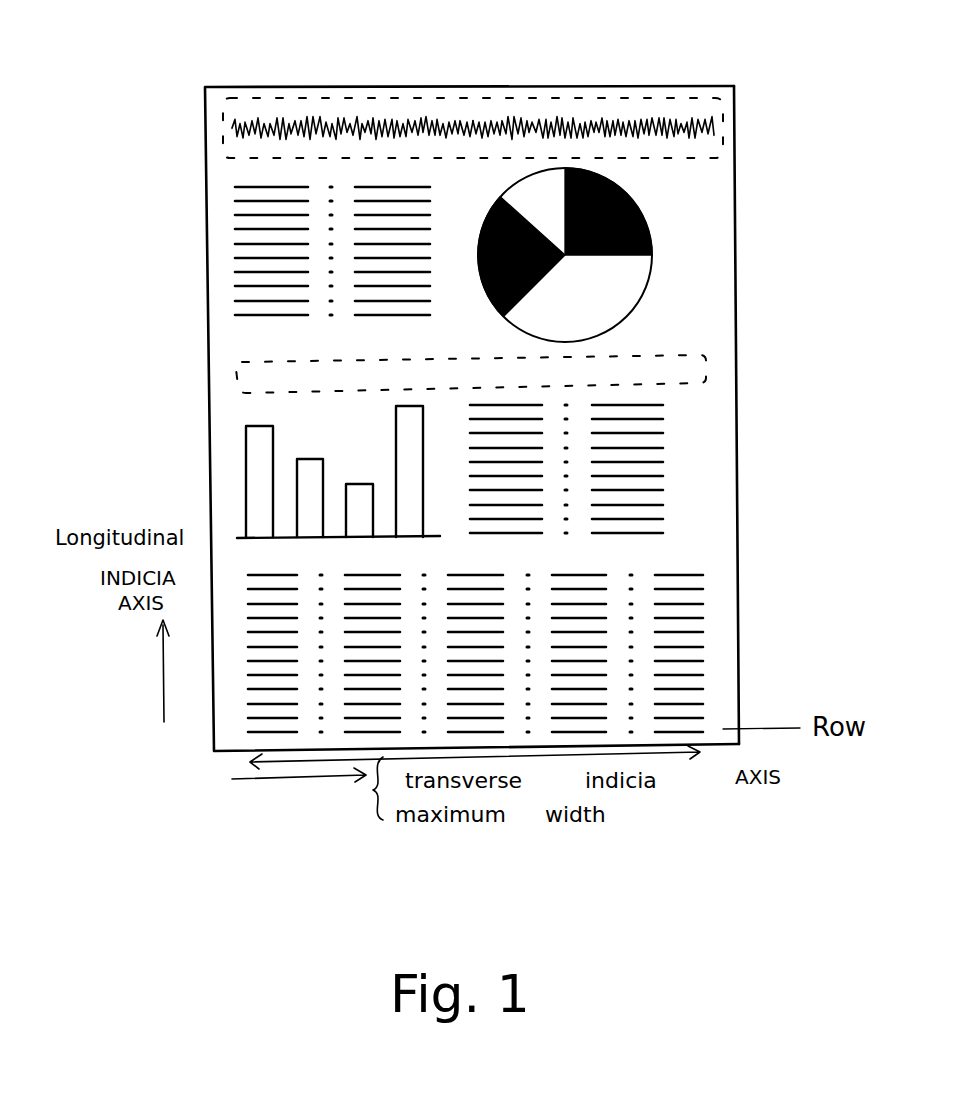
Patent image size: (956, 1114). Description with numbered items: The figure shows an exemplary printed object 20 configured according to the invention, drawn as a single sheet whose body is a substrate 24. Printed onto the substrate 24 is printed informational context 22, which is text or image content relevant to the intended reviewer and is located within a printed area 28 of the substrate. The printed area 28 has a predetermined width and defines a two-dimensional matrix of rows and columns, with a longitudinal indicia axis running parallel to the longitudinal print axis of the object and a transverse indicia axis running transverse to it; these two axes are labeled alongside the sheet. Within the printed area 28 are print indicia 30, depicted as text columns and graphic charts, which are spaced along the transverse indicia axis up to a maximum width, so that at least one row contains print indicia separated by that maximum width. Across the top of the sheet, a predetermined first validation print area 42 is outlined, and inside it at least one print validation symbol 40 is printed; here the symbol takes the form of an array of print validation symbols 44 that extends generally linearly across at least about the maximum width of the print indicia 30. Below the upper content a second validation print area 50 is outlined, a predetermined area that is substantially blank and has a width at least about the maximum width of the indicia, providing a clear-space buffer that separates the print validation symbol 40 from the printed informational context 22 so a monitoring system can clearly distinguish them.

The printed object 20 is at (768, 311).
The printed informational context 22 is at (507, 563).
The substrate 24 is at (716, 493).
The printed area 28 is at (697, 684).
The print indicia 30 is at (548, 344).
The print validation symbol 40 is at (657, 118).
The first validation print area 42 is at (713, 107).
The array of print validation symbols 44 is at (503, 120).
The second validation print area 50 is at (695, 358).